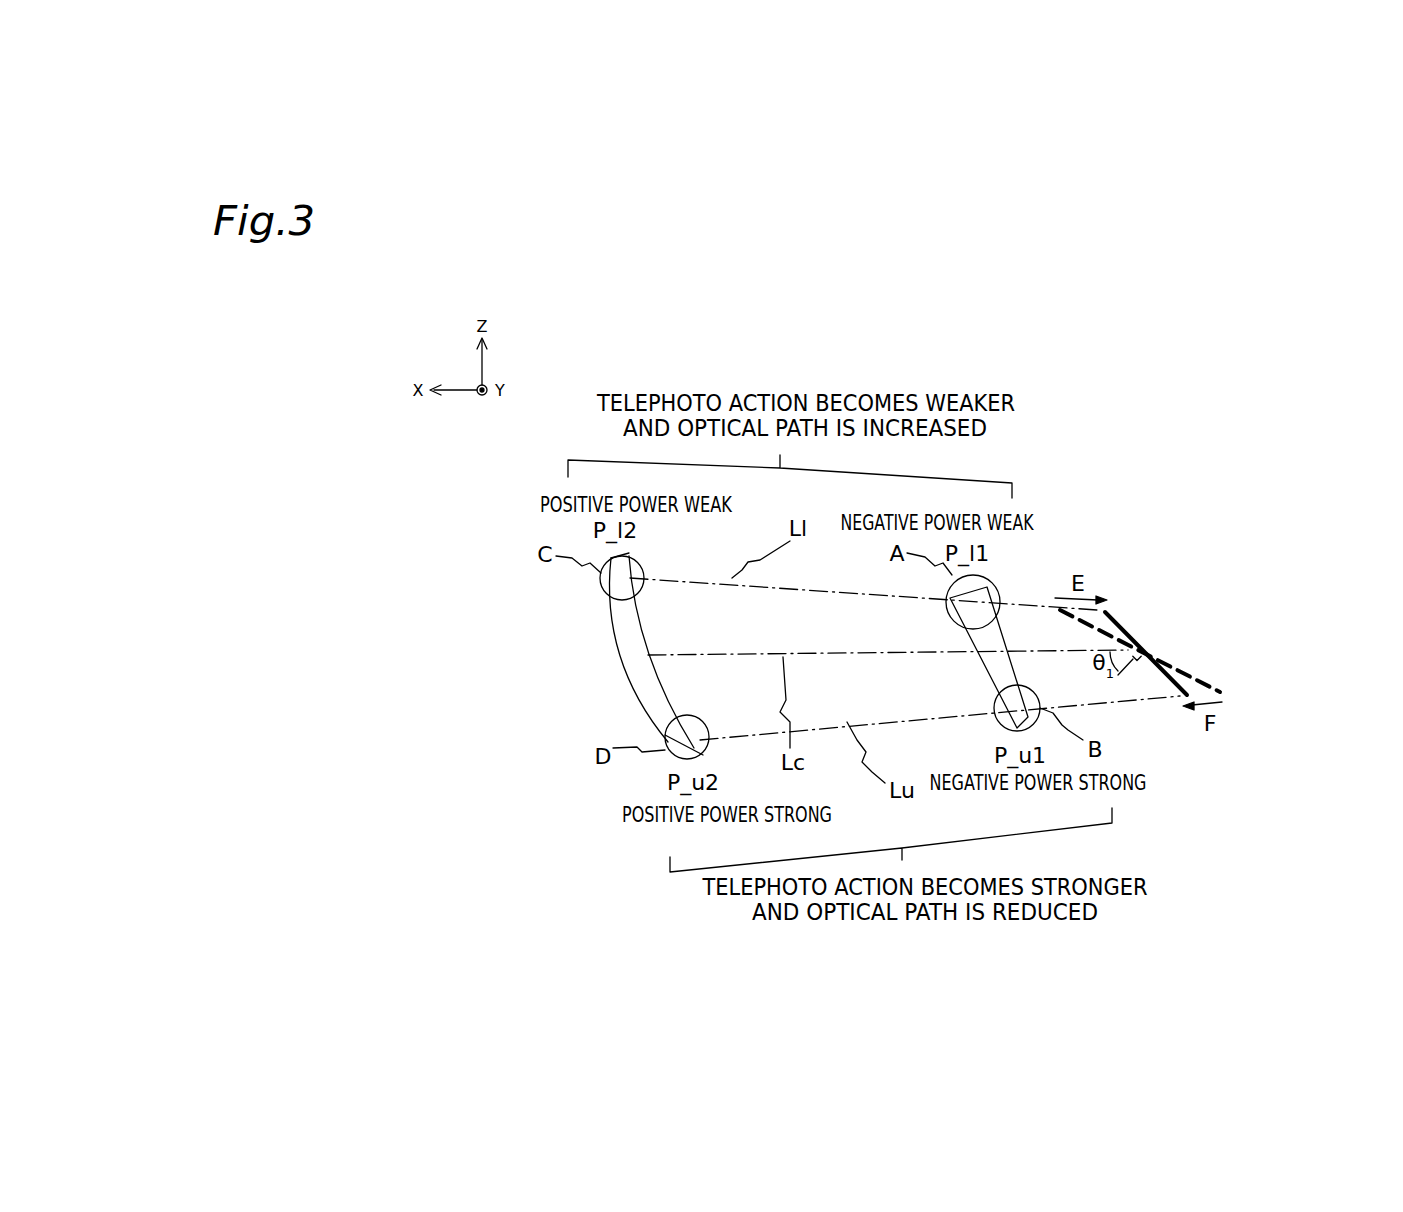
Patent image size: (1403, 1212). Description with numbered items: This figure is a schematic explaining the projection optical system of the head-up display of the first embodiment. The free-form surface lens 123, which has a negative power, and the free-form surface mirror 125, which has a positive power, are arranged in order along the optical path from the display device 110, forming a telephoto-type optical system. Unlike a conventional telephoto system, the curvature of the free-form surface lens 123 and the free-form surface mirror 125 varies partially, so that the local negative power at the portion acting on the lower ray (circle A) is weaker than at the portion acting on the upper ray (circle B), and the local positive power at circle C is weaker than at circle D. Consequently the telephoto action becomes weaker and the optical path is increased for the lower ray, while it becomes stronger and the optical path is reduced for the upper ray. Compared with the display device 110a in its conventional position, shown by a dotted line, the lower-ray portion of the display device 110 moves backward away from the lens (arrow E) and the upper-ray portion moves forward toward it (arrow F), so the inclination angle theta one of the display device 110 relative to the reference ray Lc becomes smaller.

The display device 110 is at (1189, 632).
The display device in a conventional position 110a is at (1211, 651).
The free-form surface lens 123 is at (1031, 575).
The free-form surface mirror 125 is at (603, 654).